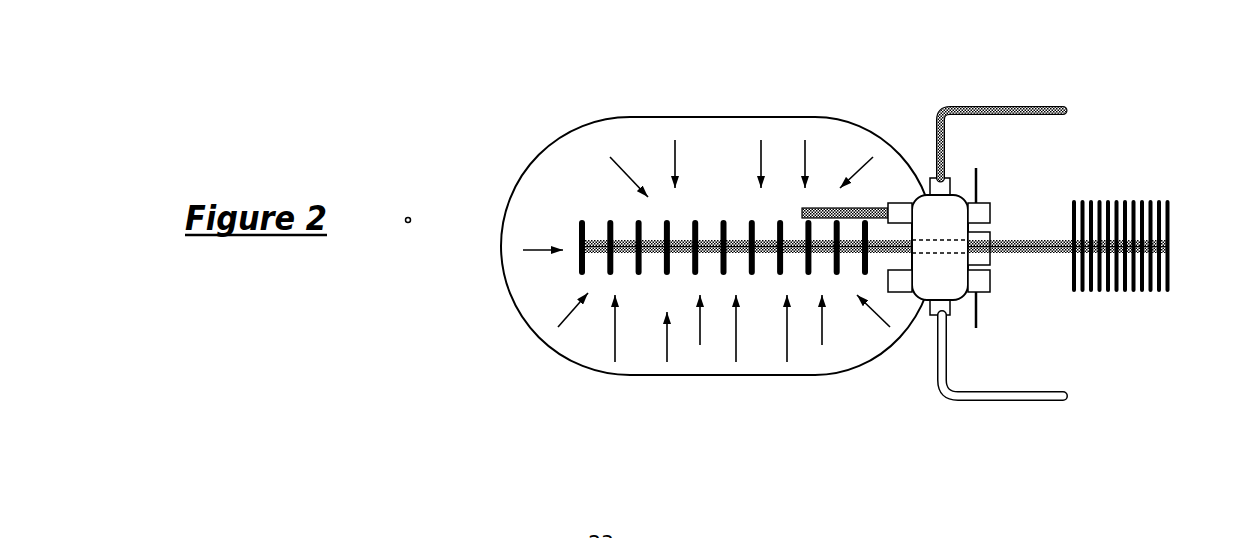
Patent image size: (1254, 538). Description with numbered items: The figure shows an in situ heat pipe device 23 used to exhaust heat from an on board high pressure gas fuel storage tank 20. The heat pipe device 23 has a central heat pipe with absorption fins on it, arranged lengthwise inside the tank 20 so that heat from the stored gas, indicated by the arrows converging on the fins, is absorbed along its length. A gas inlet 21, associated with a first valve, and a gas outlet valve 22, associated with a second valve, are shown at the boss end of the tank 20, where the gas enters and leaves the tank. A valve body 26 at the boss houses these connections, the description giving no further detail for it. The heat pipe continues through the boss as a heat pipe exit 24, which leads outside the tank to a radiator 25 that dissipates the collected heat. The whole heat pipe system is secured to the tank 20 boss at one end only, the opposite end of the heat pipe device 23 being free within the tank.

The high pressure gas fuel storage tank 20 is at (515, 310).
The gas inlet 21 is at (997, 106).
The gas outlet valve 22 is at (940, 395).
The in situ heat pipe device 23 is at (709, 240).
The heat pipe exit 24 is at (1035, 240).
The radiator 25 is at (1170, 267).
The valve body 26 is at (940, 223).